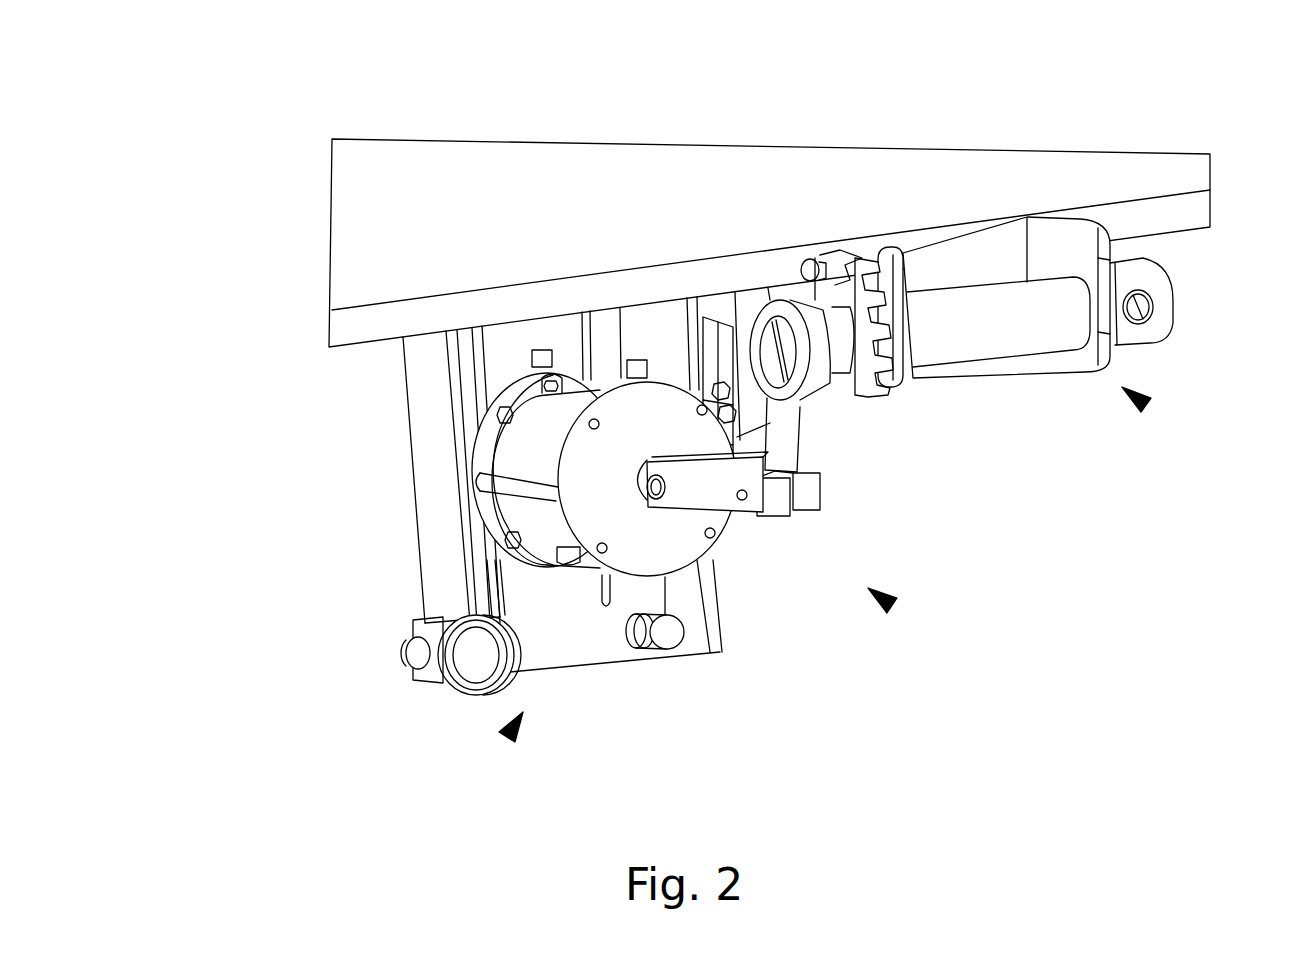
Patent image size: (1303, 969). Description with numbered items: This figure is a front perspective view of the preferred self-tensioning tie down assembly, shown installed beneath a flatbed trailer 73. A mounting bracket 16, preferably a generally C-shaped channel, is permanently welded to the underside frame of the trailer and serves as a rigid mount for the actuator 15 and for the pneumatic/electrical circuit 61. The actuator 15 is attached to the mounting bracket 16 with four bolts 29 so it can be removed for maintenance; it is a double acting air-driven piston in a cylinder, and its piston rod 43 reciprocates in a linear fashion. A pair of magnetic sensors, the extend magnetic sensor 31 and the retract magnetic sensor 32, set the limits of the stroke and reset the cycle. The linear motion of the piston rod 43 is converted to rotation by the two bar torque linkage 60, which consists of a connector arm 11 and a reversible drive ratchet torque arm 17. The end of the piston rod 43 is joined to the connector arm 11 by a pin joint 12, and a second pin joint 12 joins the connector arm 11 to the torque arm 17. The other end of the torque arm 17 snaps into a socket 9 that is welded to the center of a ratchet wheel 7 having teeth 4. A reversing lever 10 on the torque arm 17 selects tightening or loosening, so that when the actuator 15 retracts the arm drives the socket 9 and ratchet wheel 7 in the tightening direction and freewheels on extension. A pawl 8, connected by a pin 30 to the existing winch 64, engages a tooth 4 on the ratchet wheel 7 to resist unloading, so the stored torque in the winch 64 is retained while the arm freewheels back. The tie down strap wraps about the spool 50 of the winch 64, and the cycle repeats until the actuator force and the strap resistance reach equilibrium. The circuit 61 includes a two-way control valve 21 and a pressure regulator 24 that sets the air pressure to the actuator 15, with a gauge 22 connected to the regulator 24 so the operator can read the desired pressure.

The flatbed trailer 73 is at (483, 303).
The extend magnetic sensor 31 is at (540, 352).
The actuator 15 is at (602, 467).
The retract magnetic sensor 32 is at (613, 380).
The piston rod 43 is at (645, 470).
The reversing lever 10 is at (772, 312).
The pin 30 is at (812, 258).
The pawl 8 is at (836, 263).
The teeth 4 is at (882, 240).
The spool 50 is at (1000, 320).
The winch 64 is at (1146, 405).
The ratchet wheel 7 is at (905, 363).
The socket 9 is at (850, 345).
The drive ratchet torque arm 17 is at (790, 440).
The two bar torque linkage 60 is at (892, 606).
The pin joint 12 is at (658, 500).
The connector arm 11 is at (708, 492).
The 2-way control valve 21 is at (667, 650).
The pneumatic/electrical circuit 61 is at (507, 737).
The gauge 22 is at (478, 672).
The pressure regulator 24 is at (413, 653).
The bolts 29 is at (500, 415).
The mounting bracket 16 is at (440, 462).